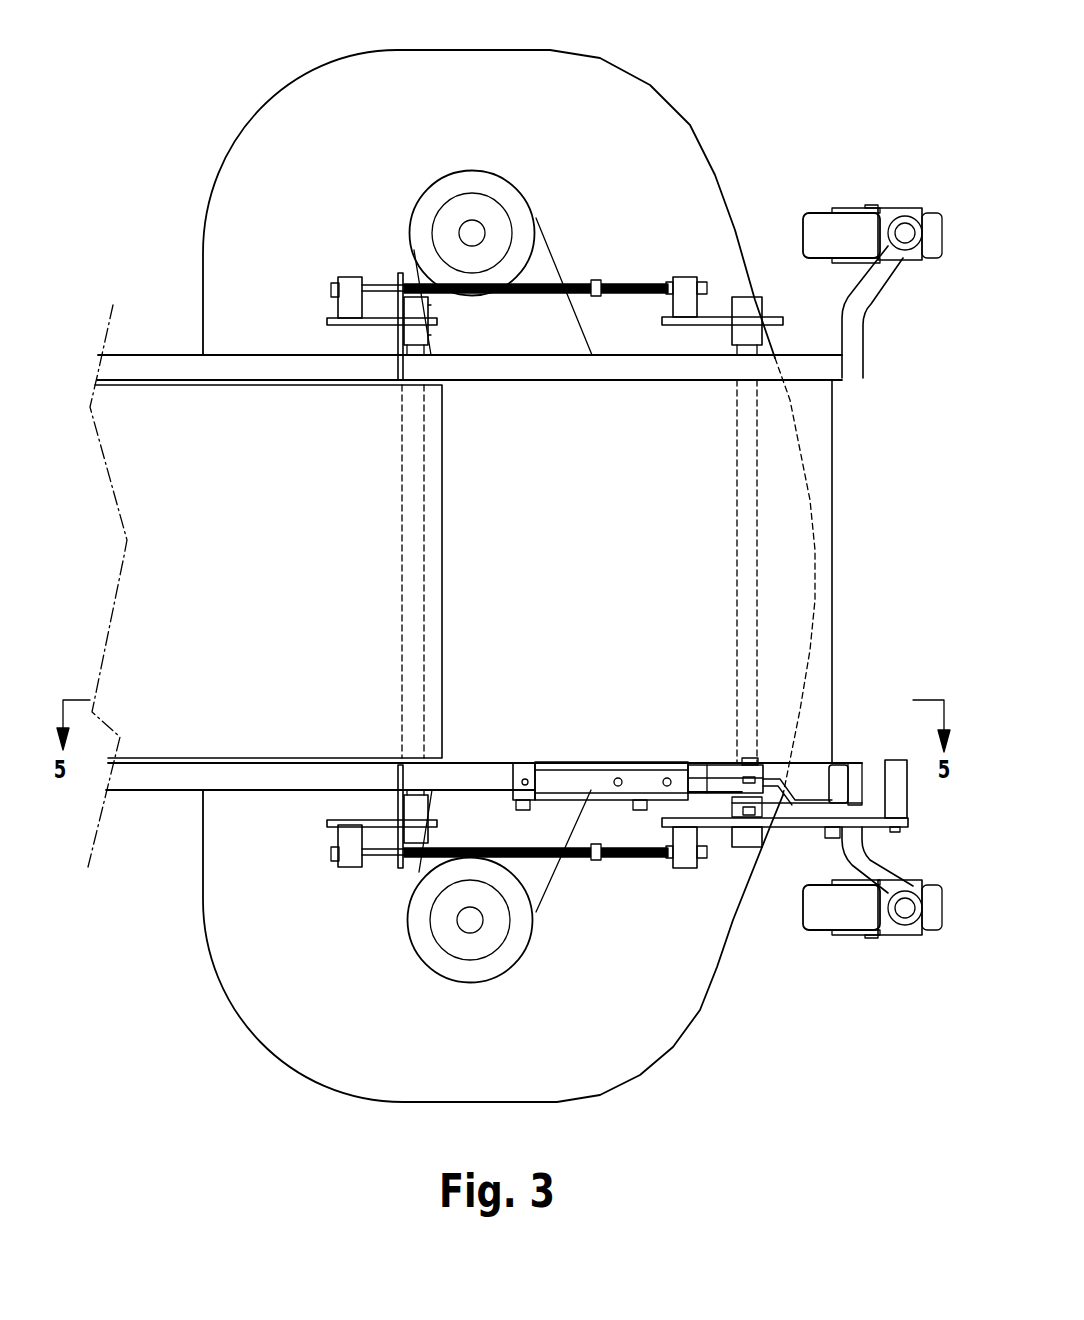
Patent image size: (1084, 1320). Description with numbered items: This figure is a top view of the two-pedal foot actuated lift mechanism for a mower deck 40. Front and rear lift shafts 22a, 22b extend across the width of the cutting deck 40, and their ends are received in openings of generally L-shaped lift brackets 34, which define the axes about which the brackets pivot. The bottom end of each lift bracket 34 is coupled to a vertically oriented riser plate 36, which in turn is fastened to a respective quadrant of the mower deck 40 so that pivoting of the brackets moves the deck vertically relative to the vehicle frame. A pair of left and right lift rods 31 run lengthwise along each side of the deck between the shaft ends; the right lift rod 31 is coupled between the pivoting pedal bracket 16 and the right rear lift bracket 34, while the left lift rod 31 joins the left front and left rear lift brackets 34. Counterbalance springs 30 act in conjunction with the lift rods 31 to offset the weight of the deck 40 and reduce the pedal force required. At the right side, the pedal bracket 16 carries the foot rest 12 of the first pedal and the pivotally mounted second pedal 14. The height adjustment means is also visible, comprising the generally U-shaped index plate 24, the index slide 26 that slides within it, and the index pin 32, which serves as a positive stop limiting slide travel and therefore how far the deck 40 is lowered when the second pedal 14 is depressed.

The foot rest 12 is at (907, 793).
The second pedal 14 is at (838, 780).
The pedal bracket 16 is at (801, 826).
The front lift shaft 22a is at (750, 640).
The rear lift shaft 22b is at (413, 640).
The index plate 24 is at (570, 780).
The index slide 26 is at (723, 780).
The counterbalance spring 30 is at (573, 281).
The lift rod 31 is at (384, 283).
The index pin 32 is at (550, 762).
The lift bracket 34 is at (327, 322).
The riser plate 36 is at (350, 300).
The mower deck 40 is at (623, 87).